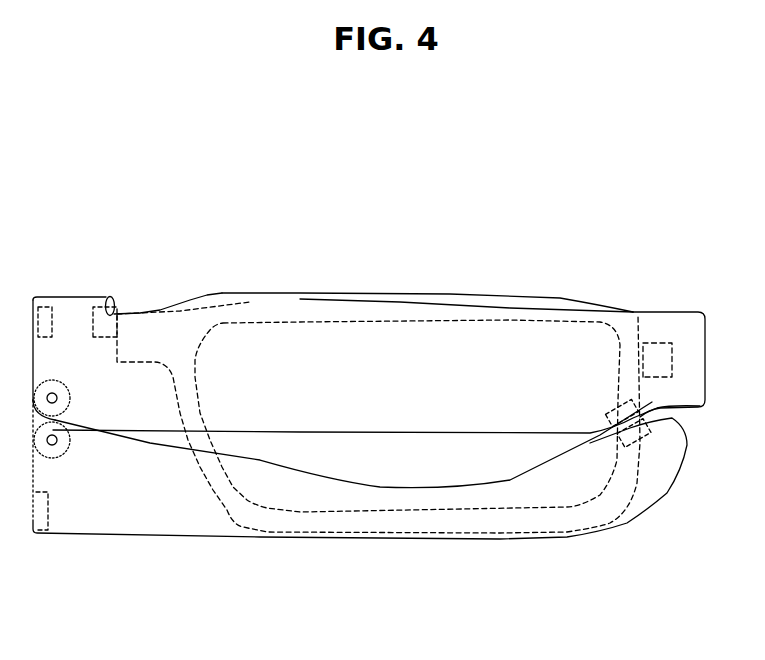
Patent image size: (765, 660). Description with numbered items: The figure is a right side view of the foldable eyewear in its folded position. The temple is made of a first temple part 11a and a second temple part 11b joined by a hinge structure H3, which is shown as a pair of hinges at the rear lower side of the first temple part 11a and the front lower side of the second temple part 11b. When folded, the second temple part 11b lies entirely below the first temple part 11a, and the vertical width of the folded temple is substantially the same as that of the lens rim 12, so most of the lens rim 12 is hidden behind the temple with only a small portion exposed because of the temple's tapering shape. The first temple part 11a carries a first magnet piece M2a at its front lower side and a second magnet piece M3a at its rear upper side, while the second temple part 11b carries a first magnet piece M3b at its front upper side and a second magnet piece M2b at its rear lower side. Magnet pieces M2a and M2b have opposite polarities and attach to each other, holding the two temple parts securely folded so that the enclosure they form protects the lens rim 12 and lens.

The lens rim 12 is at (484, 300).
The first temple part 11a is at (150, 392).
The second temple part 11b is at (182, 503).
The hinge structure H3 is at (63, 400).
The second magnet piece M3a is at (42, 327).
The first magnet piece M3b is at (37, 503).
The first magnet piece M2a is at (640, 417).
The second magnet piece M2b is at (643, 425).